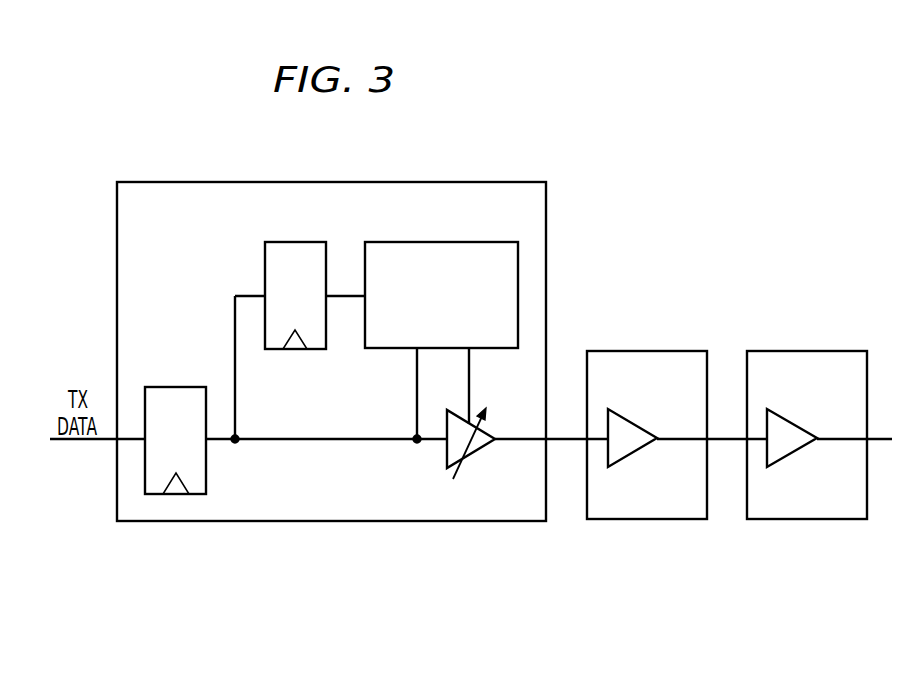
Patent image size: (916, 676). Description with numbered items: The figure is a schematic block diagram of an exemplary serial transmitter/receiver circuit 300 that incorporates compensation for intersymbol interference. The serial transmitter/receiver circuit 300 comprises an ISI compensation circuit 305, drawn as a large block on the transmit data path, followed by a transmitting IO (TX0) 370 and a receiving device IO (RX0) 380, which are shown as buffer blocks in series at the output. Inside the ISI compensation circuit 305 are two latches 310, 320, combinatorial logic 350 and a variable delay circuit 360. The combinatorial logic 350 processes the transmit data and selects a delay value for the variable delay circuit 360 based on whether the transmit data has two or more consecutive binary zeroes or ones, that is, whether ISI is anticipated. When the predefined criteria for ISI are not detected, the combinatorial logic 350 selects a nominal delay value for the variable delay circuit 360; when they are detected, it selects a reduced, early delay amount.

The serial transmitter/receiver circuit 300 is at (743, 182).
The ISI compensation circuit 305 is at (498, 181).
The latch 310 is at (283, 242).
The latch 320 is at (165, 387).
The combinatorial logic 350 is at (452, 242).
The variable delay circuit 360 is at (443, 455).
The transmitting IO (TX0) 370 is at (645, 351).
The receiving device IO (RX0) 380 is at (805, 351).